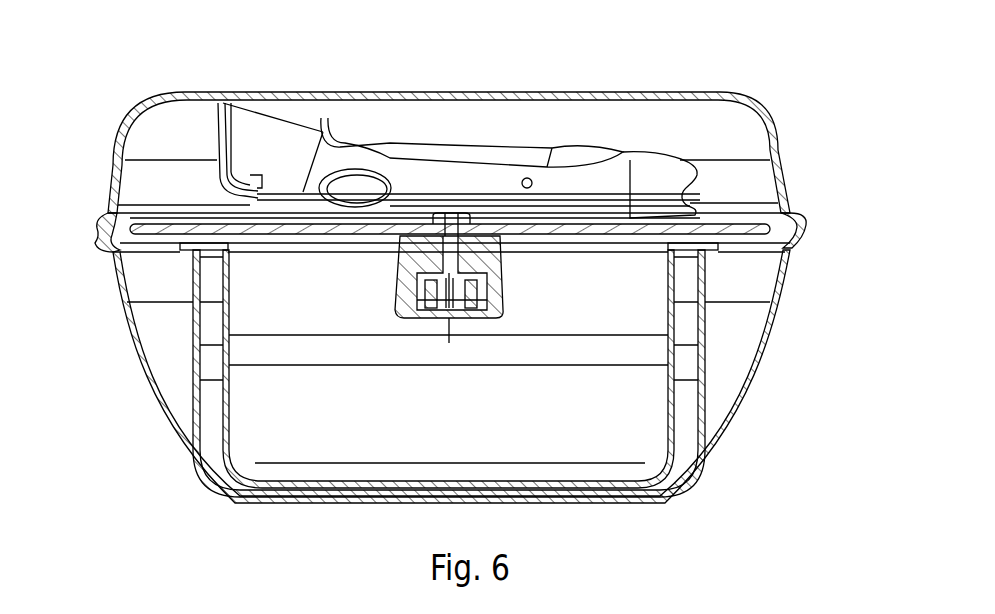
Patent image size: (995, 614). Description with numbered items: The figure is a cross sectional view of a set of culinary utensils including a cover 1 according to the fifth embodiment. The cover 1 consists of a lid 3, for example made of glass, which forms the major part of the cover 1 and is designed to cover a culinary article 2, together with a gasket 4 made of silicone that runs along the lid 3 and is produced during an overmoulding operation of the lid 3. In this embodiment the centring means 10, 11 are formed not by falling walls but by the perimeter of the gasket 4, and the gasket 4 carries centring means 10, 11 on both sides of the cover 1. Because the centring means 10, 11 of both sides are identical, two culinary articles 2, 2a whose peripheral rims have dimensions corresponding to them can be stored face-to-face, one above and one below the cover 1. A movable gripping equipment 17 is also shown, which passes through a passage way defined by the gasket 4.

The cover 1 is at (723, 223).
The culinary article 2 is at (763, 367).
The culinary article 2a is at (767, 118).
The lid 3 is at (290, 222).
The gasket 4 is at (790, 213).
The centring means 10 is at (790, 212).
The centring means 11 is at (110, 252).
The movable gripping equipment 17 is at (403, 170).